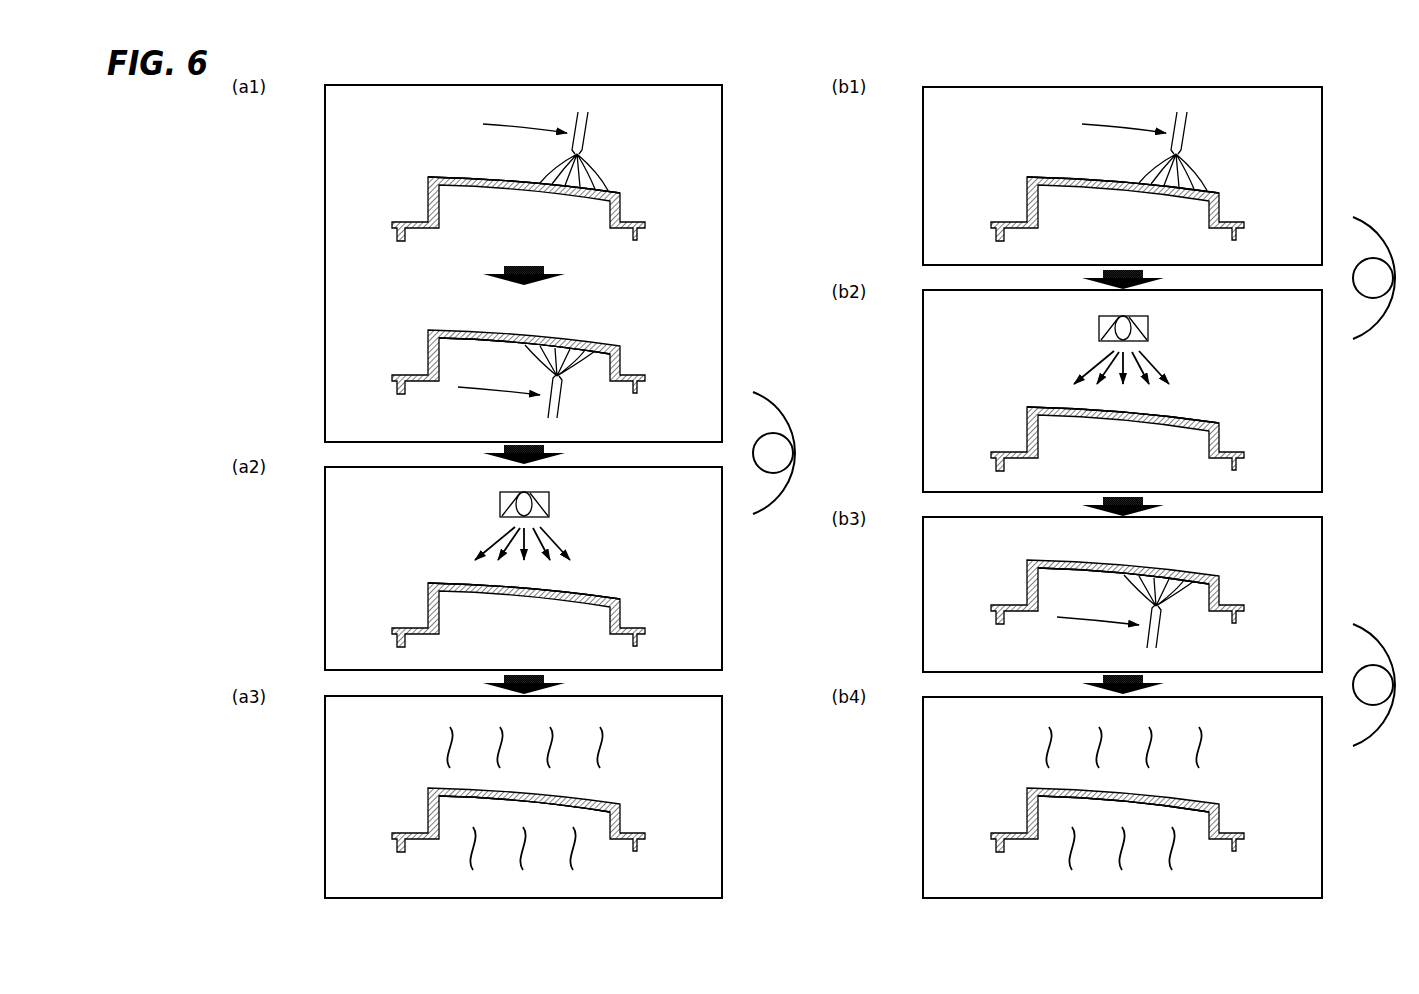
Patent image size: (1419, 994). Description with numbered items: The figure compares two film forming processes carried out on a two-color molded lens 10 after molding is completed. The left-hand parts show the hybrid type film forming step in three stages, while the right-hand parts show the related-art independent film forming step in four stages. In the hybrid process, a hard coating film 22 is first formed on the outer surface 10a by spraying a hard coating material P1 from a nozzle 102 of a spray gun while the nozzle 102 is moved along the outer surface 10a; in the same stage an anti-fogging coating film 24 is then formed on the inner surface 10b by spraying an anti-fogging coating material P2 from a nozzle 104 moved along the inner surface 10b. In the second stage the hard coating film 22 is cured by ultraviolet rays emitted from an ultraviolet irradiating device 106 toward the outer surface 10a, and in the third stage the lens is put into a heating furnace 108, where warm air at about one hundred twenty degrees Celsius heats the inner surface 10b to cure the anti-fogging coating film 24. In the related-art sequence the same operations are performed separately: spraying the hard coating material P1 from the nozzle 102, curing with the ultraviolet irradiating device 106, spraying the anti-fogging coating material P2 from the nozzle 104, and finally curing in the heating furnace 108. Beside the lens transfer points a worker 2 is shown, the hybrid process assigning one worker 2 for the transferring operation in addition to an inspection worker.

The two-color molded lens 10 is at (762, 501).
The outer surface 10a is at (819, 350).
The inner surface 10b is at (808, 610).
The hard coating film 22 is at (830, 364).
The anti-fogging coating film 24 is at (824, 610).
The nozzle 102 is at (891, 133).
The nozzle 104 is at (869, 520).
The ultraviolet irradiating device 106 is at (870, 438).
The heating furnace 108 is at (871, 798).
The hard coating material P1 is at (900, 171).
The anti-fogging coating material P2 is at (871, 495).
The worker 2 is at (1074, 549).